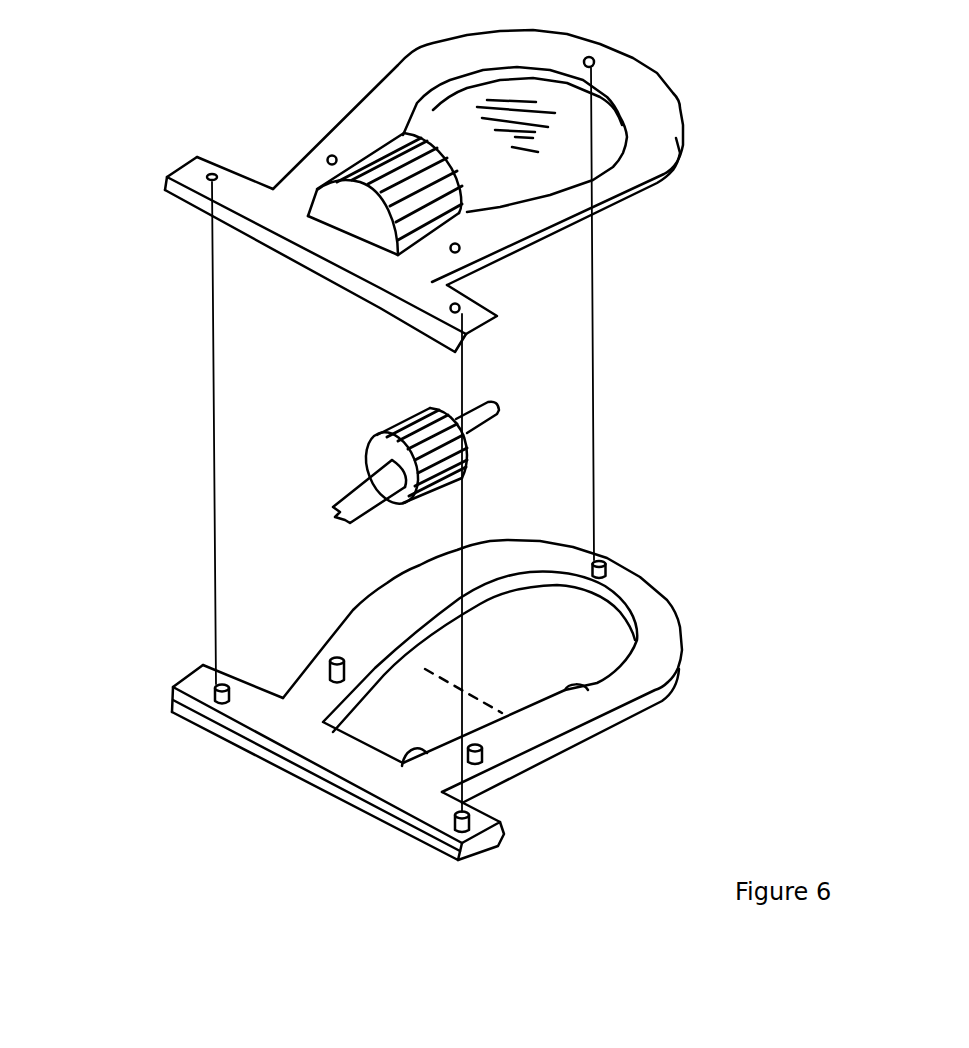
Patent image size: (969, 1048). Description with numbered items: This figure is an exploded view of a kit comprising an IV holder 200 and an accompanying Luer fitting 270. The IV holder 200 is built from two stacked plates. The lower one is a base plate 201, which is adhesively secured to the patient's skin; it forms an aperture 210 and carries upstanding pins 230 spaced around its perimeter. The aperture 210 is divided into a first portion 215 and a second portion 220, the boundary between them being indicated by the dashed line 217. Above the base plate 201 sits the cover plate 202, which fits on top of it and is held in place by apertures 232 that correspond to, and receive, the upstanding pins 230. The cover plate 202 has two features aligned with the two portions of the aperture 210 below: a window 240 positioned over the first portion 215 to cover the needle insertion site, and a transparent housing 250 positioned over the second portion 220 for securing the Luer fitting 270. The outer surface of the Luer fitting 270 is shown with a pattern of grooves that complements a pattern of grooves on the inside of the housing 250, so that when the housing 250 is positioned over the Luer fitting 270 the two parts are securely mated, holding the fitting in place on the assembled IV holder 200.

The IV holder 200 is at (185, 238).
The base plate 201 is at (663, 675).
The cover plate 202 is at (672, 137).
The aperture 210 is at (575, 640).
The first portion 215 is at (583, 688).
The dashed line 217 is at (417, 663).
The second portion 220 is at (400, 754).
The upstanding pins 230 is at (327, 690).
The apertures 232 is at (205, 170).
The window 240 is at (575, 138).
The transparent housing 250 is at (382, 163).
The Luer fitting 270 is at (450, 477).